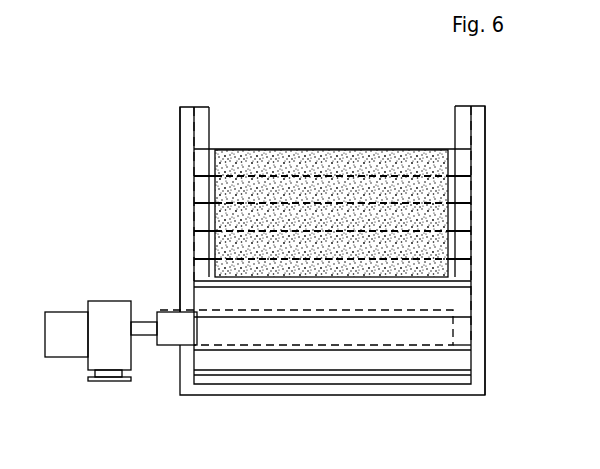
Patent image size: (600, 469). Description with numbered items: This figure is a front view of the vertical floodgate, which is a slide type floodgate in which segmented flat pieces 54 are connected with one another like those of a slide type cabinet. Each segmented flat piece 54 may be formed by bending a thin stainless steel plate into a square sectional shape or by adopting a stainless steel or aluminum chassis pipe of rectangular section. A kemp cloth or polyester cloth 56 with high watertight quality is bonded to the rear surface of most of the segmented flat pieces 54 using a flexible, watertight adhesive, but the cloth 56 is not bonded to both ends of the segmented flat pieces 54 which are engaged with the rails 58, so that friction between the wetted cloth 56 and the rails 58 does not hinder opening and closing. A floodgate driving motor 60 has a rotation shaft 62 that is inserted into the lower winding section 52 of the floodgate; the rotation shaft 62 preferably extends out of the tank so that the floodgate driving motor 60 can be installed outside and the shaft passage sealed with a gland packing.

The lower winding section 52 is at (346, 350).
The segmented flat piece 54 is at (214, 153).
The cloth 56 is at (327, 168).
The rail 58 is at (188, 192).
The floodgate driving motor 60 is at (53, 312).
The rotation shaft 62 is at (153, 328).